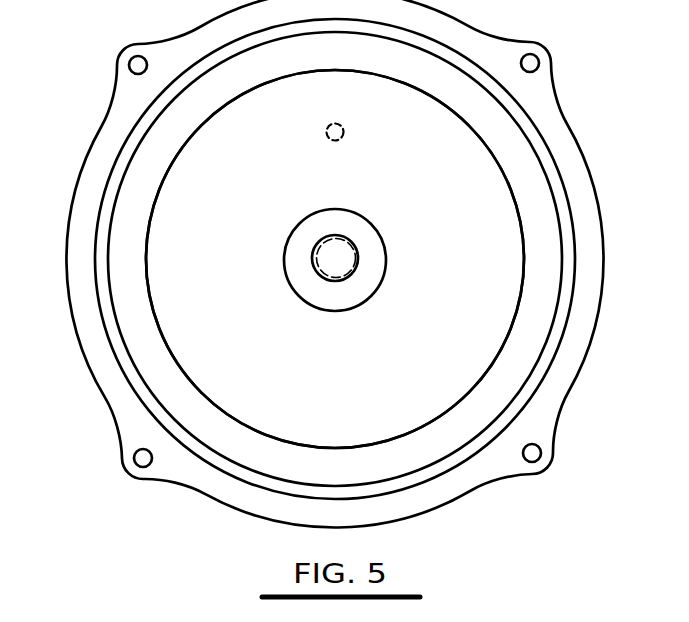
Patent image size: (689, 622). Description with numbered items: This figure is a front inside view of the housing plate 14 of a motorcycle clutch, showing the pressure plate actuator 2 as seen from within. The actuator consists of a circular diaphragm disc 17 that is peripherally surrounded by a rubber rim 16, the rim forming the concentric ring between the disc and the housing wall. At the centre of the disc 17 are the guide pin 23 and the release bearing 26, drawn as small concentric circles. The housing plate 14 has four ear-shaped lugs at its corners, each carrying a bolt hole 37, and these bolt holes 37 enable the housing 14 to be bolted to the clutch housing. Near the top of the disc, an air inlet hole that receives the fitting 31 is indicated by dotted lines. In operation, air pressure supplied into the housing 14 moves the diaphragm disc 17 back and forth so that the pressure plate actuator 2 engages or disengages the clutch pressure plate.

The pressure plate actuator 2 is at (477, 198).
The housing plate 14 is at (603, 243).
The rubber rim 16 is at (149, 161).
The diaphragm disc 17 is at (193, 328).
The guide pin 23 is at (330, 253).
The release bearing 26 is at (366, 278).
The fitting 31 is at (331, 138).
The bolt holes 37 is at (541, 453).